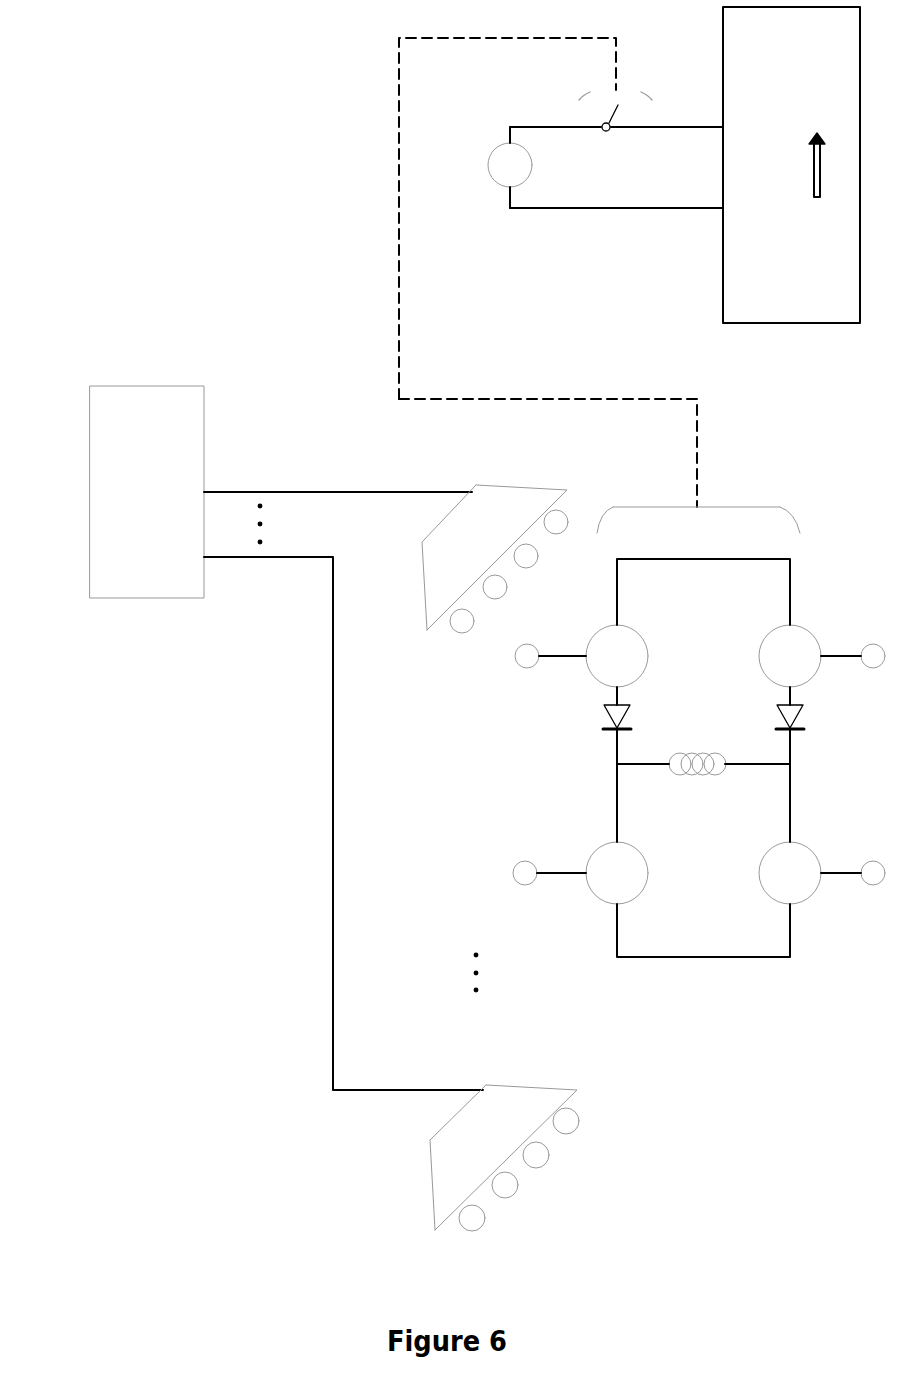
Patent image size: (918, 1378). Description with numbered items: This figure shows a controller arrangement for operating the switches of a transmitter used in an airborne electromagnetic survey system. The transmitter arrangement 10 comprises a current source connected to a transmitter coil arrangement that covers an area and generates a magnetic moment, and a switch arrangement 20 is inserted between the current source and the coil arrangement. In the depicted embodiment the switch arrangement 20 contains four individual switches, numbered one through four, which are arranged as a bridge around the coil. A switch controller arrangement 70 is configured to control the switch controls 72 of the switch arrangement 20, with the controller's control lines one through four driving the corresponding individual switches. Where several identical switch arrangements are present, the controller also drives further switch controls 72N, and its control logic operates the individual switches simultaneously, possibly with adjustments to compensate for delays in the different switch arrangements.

The transmitter arrangement 10 is at (519, 257).
The switch arrangement 20 is at (699, 559).
The switch controller arrangement 70 is at (286, 738).
The switch controls 72 is at (511, 665).
The switch controls 72N is at (605, 1133).